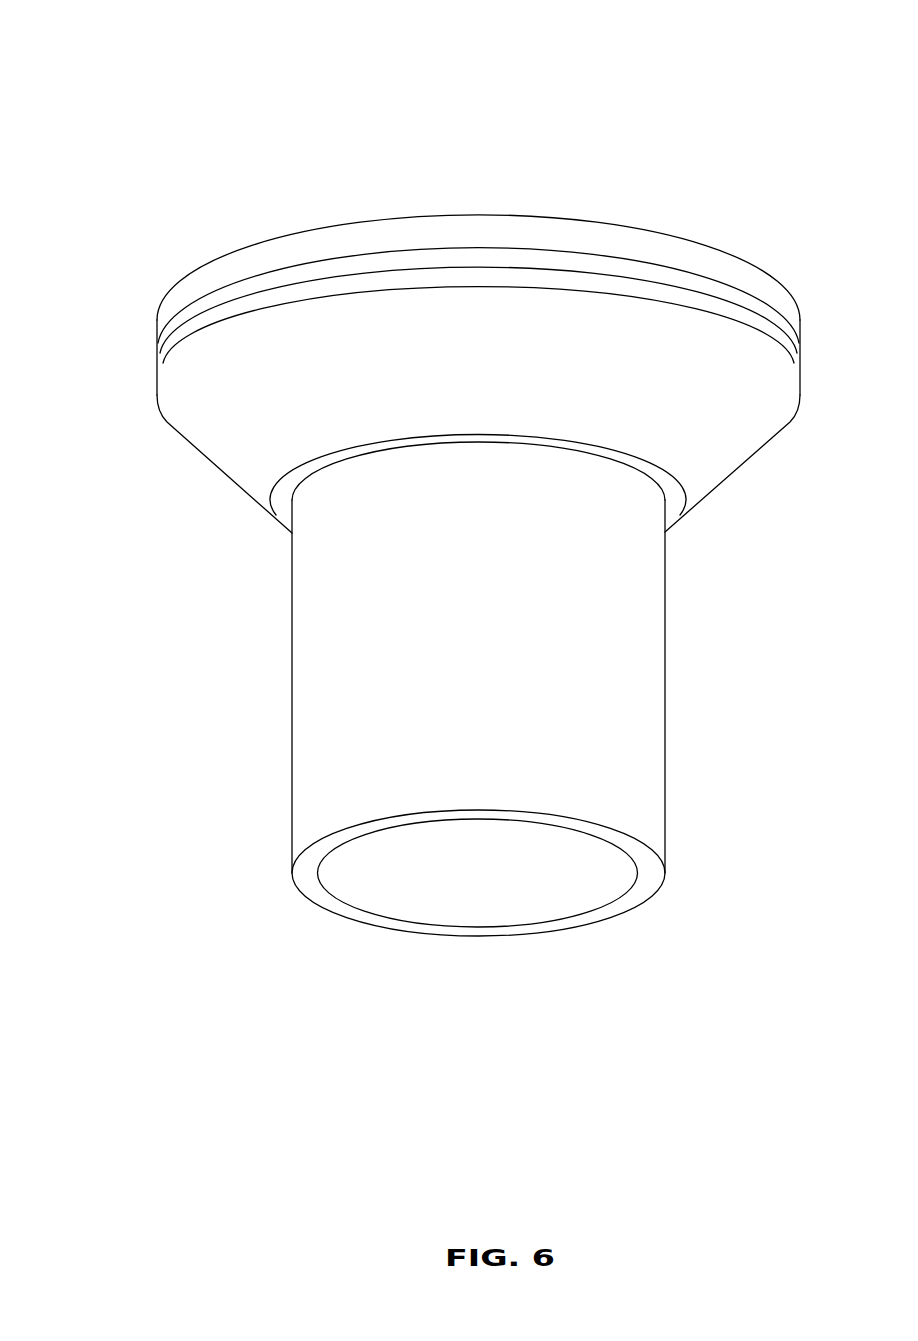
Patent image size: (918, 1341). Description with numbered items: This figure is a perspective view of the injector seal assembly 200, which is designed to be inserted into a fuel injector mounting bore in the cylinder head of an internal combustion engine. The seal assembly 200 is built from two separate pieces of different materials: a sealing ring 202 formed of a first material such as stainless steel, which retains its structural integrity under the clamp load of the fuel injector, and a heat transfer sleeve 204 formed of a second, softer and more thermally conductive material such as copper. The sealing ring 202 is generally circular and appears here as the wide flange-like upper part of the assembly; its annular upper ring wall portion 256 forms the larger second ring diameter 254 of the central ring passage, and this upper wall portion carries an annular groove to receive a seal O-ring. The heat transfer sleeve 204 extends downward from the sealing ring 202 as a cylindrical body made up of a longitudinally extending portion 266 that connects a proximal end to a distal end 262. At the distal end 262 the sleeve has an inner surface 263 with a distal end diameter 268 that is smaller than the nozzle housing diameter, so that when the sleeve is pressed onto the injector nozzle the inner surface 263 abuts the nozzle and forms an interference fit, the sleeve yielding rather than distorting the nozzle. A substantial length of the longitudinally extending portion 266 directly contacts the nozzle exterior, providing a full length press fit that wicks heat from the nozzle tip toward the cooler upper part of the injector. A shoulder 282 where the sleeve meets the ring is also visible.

The injector seal assembly 200 is at (177, 72).
The sealing ring 202 is at (742, 450).
The heat transfer sleeve 204 is at (486, 704).
The second ring diameter 254 is at (800, 369).
The upper ring wall portion 256 is at (790, 316).
The distal end 262 is at (665, 832).
The inner surface 263 is at (420, 900).
The longitudinally extending portion 266 is at (292, 717).
The distal end diameter 268 is at (318, 873).
The shoulder ring 282 is at (705, 497).